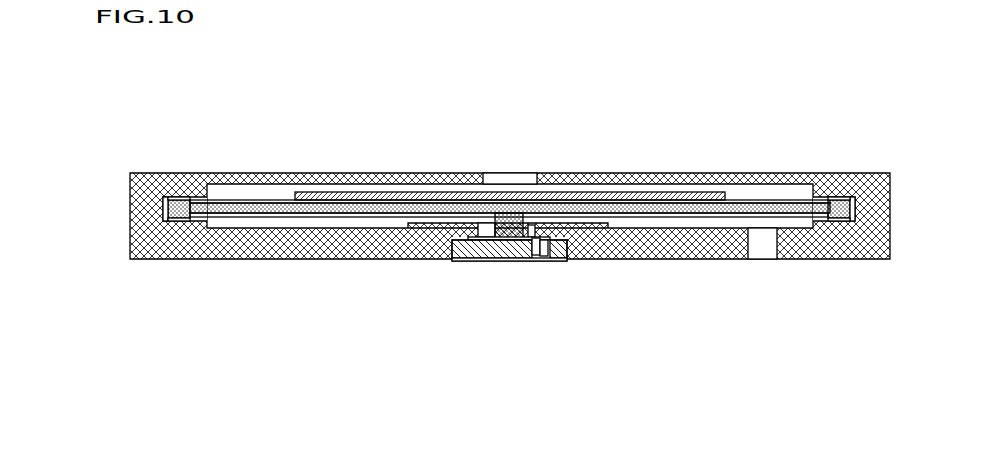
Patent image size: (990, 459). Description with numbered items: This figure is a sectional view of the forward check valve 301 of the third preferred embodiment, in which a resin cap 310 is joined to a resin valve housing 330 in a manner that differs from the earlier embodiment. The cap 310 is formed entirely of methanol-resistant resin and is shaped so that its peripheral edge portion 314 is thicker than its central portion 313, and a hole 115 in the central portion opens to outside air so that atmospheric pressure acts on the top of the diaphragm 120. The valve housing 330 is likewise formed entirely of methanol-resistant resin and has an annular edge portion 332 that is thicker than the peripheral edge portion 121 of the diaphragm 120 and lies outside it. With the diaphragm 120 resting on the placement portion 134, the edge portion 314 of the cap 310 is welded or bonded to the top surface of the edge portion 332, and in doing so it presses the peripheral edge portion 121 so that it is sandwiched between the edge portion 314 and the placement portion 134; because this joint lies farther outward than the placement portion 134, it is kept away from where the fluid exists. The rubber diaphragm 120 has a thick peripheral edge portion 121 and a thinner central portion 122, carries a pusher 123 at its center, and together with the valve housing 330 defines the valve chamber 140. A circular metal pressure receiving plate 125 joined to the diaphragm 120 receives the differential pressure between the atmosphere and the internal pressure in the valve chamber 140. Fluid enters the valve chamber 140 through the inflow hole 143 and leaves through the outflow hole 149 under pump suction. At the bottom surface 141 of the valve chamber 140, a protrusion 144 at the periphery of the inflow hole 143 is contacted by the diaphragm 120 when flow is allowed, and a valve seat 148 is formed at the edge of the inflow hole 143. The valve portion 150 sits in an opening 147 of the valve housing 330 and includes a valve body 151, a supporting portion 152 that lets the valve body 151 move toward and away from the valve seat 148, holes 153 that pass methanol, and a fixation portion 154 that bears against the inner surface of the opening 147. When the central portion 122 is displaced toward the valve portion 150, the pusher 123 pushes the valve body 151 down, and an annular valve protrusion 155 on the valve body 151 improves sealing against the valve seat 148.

The forward check valve 301 is at (917, 143).
The cap 310 is at (797, 170).
The central portion 313 is at (305, 175).
The peripheral edge portion 314 is at (158, 175).
The valve housing 330 is at (893, 243).
The annular edge portion 332 is at (130, 212).
The peripheral edge portion 121 is at (163, 197).
The diaphragm 120 is at (745, 207).
The central portion 122 is at (560, 195).
The pusher 123 is at (513, 182).
The hole 115 is at (527, 184).
The pressure receiving plate 125 is at (637, 201).
The inflow hole 143 is at (515, 210).
The protrusion 144 is at (480, 233).
The valve seat 148 is at (495, 238).
The opening 147 is at (447, 259).
The valve portion 150 is at (458, 262).
The valve body 151 is at (508, 261).
The supporting portion 152 is at (477, 262).
The holes 153 is at (543, 262).
The fixation portion 154 is at (562, 262).
The valve protrusion 155 is at (530, 257).
The outflow hole 149 is at (767, 250).
The placement portion 134 is at (185, 236).
The valve chamber 140 is at (343, 260).
The bottom surface 141 is at (285, 260).